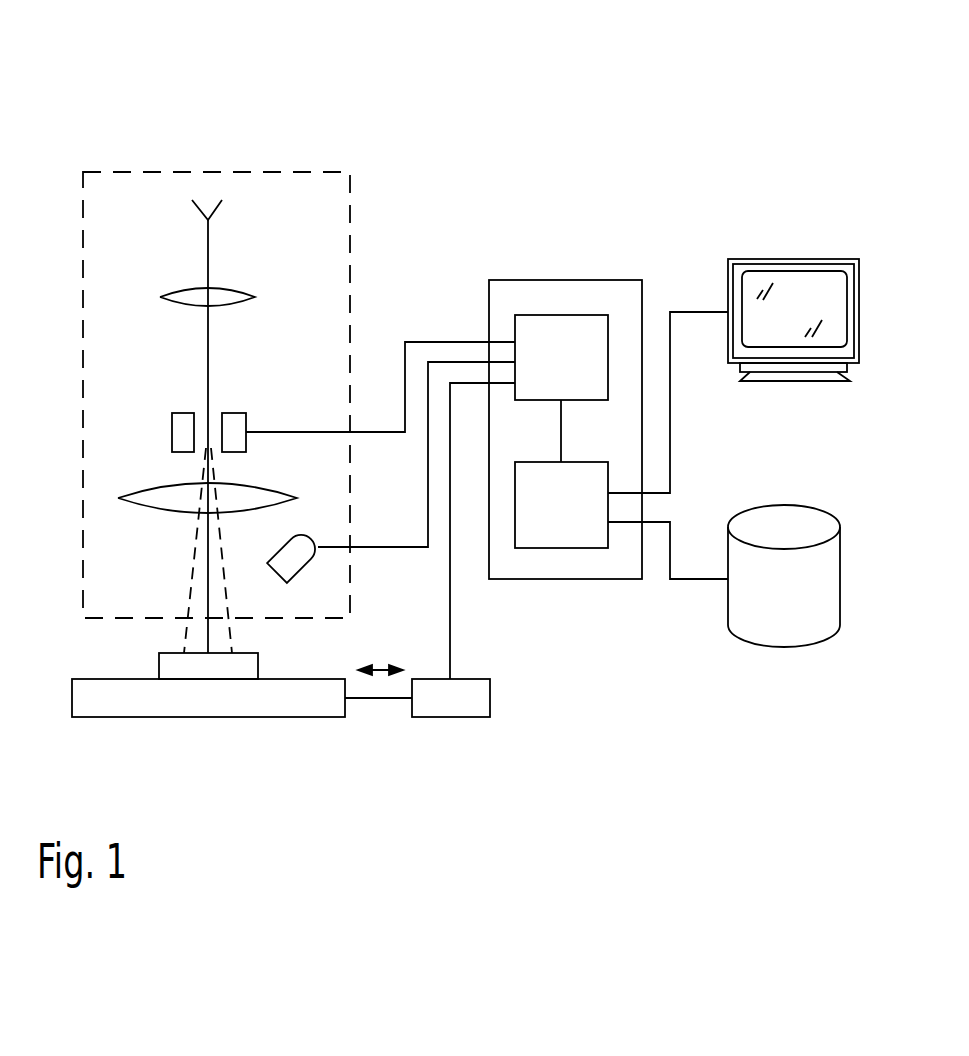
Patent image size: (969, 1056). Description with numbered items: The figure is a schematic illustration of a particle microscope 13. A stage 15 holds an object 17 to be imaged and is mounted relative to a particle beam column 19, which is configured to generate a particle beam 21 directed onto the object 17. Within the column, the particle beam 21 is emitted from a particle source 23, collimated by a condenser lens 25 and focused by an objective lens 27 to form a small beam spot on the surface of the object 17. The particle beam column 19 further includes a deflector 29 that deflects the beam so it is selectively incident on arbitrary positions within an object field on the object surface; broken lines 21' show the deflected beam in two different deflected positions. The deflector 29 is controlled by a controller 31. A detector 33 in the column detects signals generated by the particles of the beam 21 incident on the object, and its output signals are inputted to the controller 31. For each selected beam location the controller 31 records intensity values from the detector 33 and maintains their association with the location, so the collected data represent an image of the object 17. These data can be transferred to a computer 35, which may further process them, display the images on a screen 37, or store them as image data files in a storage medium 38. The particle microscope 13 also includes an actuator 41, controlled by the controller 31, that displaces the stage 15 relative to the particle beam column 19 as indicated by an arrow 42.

The particle microscope 13 is at (660, 88).
The stage 15 is at (105, 717).
The object 17 is at (159, 663).
The particle beam column 19 is at (332, 172).
The particle beam 21 is at (180, 436).
The broken lines 21' is at (186, 550).
The particle source 23 is at (213, 212).
The condenser lens 25 is at (255, 295).
The objective lens 27 is at (132, 503).
The deflector 29 is at (172, 432).
The controller 31 is at (575, 376).
The detector 33 is at (300, 575).
The computer 35 is at (575, 521).
The screen 37 is at (793, 259).
The storage medium 38 is at (782, 645).
The actuator 41 is at (450, 717).
The arrow 42 is at (380, 672).